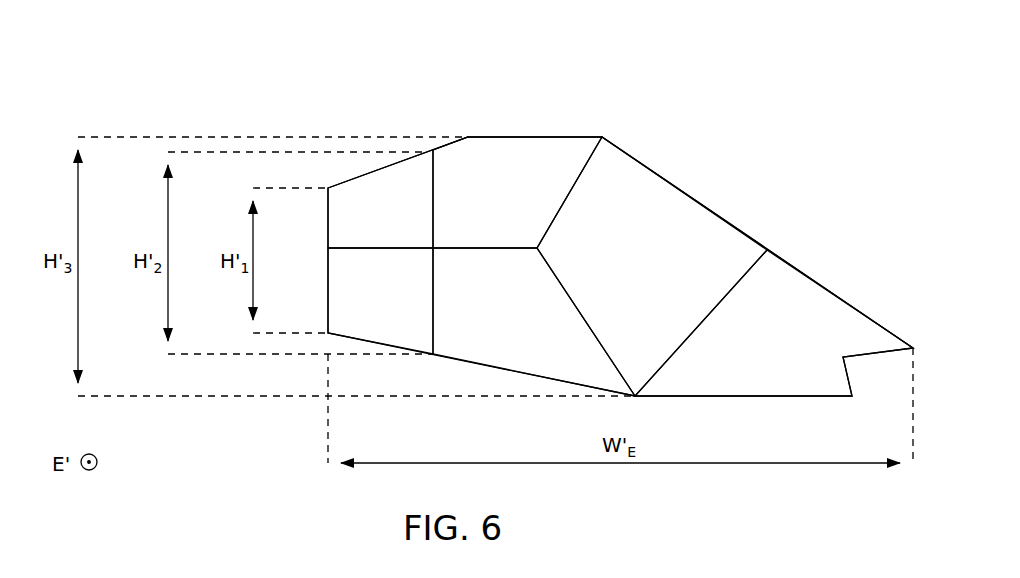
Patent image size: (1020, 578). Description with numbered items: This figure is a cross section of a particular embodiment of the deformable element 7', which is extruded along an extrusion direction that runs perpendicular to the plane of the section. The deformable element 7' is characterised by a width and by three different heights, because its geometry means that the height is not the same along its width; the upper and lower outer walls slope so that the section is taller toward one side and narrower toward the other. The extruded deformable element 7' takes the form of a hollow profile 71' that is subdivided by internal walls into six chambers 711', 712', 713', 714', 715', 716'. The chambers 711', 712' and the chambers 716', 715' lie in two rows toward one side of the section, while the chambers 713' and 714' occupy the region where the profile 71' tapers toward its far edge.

The deformable element 7' is at (620, 207).
The hollow profile 71' is at (757, 234).
The chamber 711' is at (398, 168).
The chamber 712' is at (517, 163).
The chamber 713' is at (652, 250).
The chamber 714' is at (774, 307).
The chamber 715' is at (534, 347).
The chamber 716' is at (380, 343).